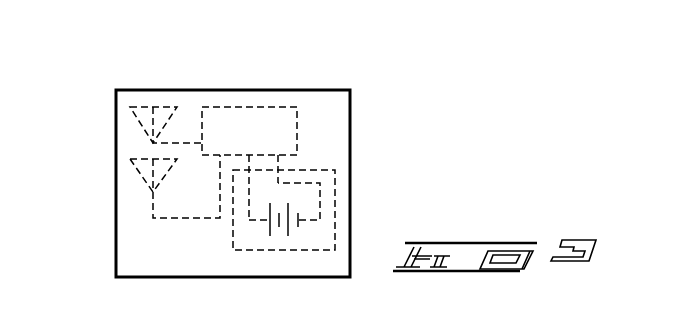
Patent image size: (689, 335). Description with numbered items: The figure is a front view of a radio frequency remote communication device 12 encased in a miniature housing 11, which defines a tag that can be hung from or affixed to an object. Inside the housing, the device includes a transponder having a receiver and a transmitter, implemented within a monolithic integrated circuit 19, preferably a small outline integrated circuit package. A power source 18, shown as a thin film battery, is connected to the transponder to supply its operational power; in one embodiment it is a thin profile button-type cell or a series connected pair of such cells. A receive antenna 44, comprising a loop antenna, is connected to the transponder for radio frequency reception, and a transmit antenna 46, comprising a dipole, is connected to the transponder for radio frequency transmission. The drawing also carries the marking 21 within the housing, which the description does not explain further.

The miniature housing 11 is at (116, 237).
The remote communication device 12 is at (350, 133).
The power source 18 is at (335, 205).
The monolithic integrated circuit 19 is at (268, 107).
The label / indicator 21 is at (173, 265).
The receive antenna 44 is at (157, 106).
The transmit antenna 46 is at (138, 177).